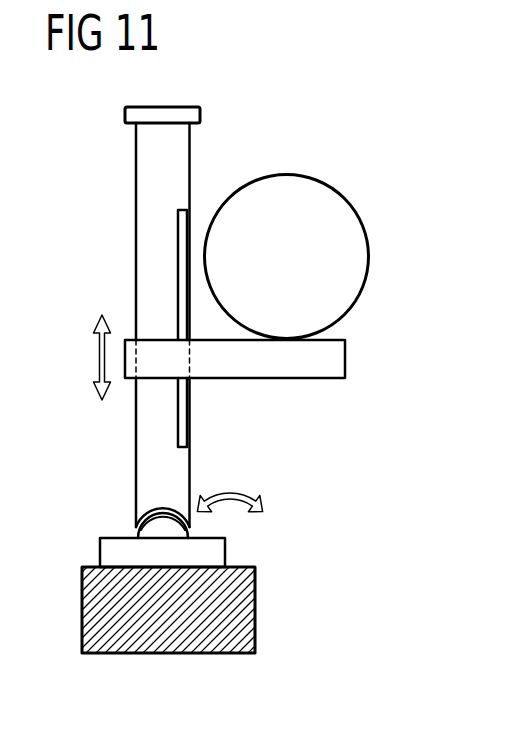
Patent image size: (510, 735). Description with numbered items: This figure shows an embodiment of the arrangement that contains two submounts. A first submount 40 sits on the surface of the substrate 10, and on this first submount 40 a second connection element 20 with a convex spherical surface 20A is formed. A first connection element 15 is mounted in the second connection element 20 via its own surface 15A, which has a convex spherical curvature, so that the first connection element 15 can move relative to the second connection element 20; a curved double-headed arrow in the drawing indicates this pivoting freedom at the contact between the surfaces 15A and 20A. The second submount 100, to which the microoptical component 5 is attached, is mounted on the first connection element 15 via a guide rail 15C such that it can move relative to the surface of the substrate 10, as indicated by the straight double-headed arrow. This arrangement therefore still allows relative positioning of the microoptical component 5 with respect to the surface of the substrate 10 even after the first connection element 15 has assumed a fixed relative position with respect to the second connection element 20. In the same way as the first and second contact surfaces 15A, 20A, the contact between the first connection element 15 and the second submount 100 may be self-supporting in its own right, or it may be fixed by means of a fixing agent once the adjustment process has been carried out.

The microoptical component 5 is at (363, 259).
The substrate 10 is at (242, 607).
The first connection element 15 is at (147, 445).
The surface with convex spherical curvature 15A is at (176, 510).
The guide rail 15C is at (180, 257).
The second connection element 20 is at (160, 522).
The convex spherical surface 20A is at (146, 517).
The first submount 40 is at (215, 553).
The second submount 100 is at (340, 358).